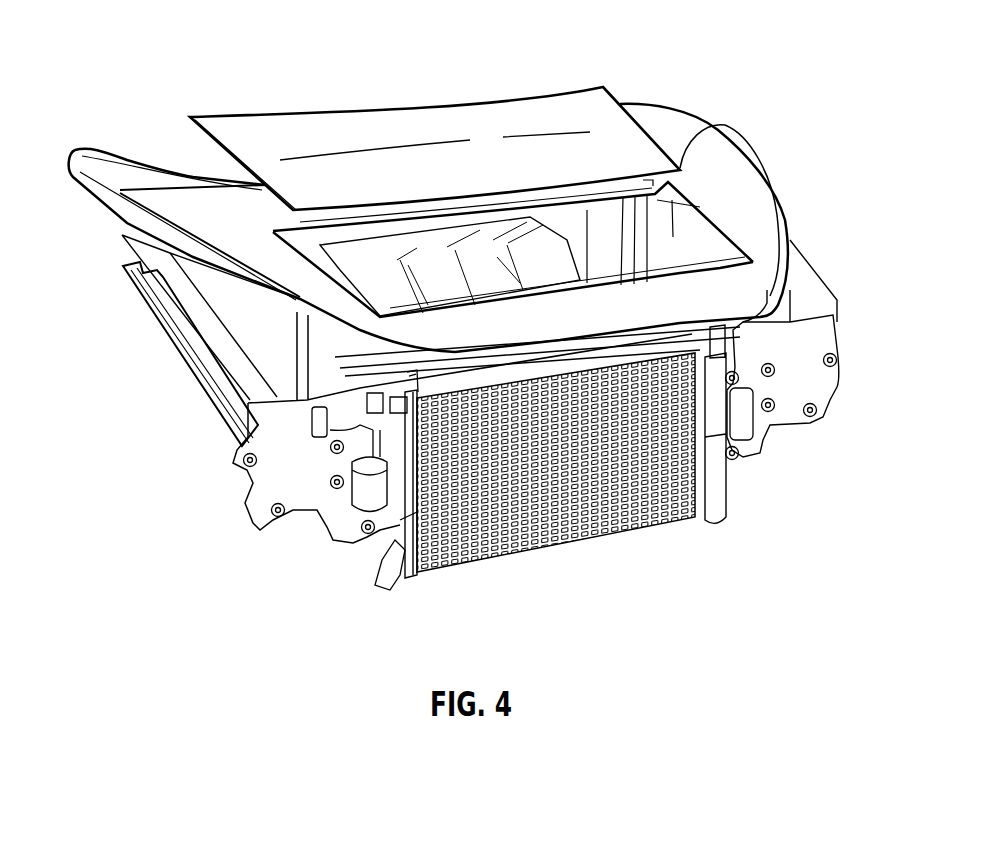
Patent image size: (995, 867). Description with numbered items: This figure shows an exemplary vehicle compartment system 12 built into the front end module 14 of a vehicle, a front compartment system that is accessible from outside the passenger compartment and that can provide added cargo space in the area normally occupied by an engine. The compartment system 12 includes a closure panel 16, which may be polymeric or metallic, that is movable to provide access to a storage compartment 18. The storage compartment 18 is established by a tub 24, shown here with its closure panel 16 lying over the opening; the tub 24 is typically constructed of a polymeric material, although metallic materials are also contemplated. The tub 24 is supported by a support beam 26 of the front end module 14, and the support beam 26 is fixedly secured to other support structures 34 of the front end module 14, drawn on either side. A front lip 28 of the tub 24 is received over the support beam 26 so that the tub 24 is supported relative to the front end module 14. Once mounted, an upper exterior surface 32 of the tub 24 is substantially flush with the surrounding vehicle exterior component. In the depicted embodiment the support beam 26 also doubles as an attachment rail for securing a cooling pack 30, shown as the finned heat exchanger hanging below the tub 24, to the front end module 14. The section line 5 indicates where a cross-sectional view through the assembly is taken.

The section line 5- 5 is at (399, 105).
The compartment system 12 is at (617, 91).
The front end module 14 is at (168, 345).
The closure panel 16 is at (452, 112).
The storage compartment 18 is at (655, 254).
The tub 24 is at (706, 124).
The support beam 26 is at (331, 392).
The front lip 28 is at (593, 303).
The cooling pack 30 is at (513, 557).
The upper exterior surface 32 is at (730, 156).
The support structures 34 is at (803, 280).